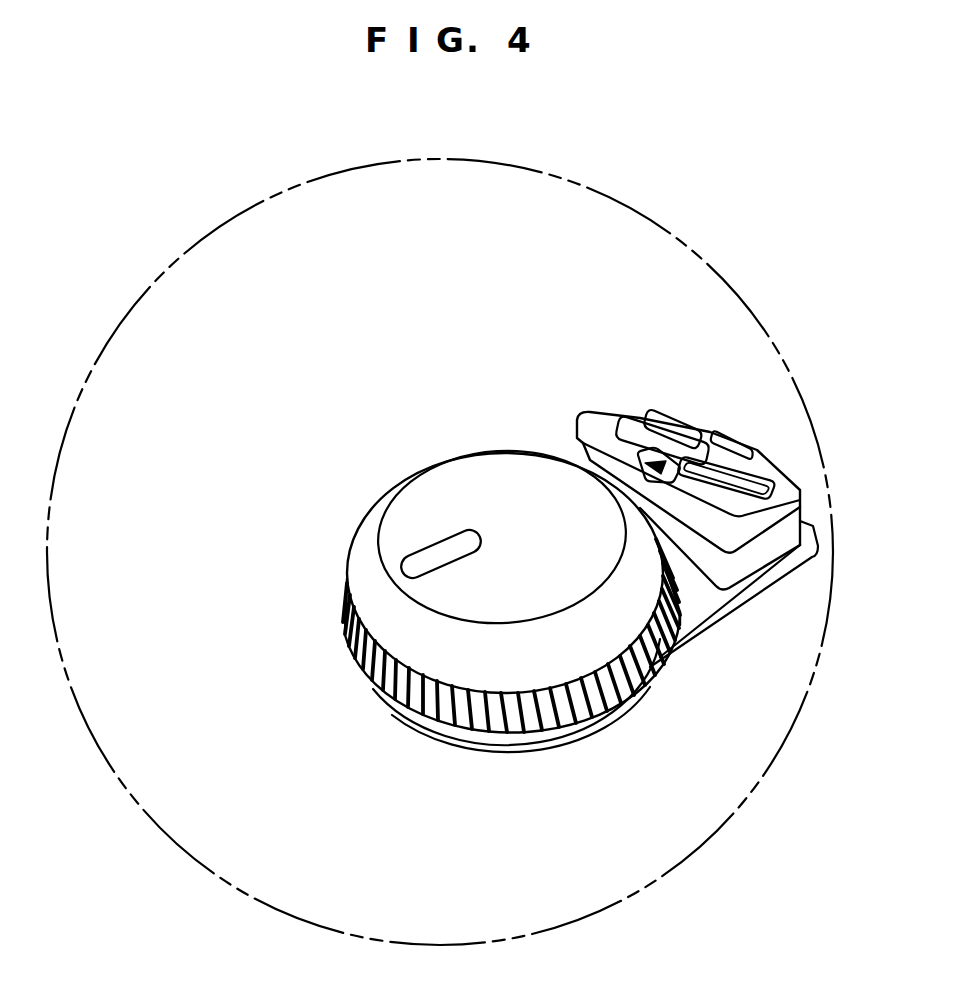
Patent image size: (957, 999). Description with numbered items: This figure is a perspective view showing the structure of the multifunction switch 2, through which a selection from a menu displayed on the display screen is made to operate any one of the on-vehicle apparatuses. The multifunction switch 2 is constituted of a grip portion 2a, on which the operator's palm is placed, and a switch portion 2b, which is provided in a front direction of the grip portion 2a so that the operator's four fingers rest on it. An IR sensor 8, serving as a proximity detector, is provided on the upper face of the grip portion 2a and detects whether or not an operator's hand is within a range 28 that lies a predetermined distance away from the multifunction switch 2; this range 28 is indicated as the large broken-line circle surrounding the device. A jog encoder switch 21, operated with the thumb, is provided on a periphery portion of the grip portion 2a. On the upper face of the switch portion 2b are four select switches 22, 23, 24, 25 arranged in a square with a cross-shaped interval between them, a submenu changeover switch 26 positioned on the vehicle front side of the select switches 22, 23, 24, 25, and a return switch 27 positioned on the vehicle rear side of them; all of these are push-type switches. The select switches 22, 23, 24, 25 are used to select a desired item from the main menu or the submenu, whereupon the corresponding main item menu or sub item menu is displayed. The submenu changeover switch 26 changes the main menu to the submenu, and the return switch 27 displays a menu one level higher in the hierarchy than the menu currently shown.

The multifunction switch 2 is at (489, 380).
The grip portion 2a is at (498, 446).
The switch portion 2b is at (566, 430).
The IR sensor 8 is at (441, 553).
The jog encoder switch 21 is at (534, 722).
The select switch 22 is at (777, 478).
The select switch 23 is at (740, 490).
The select switch 24 is at (677, 415).
The select switch 25 is at (633, 422).
The submenu changeover switch 26 is at (746, 428).
The return switch 27 is at (613, 440).
The range 28 is at (692, 858).